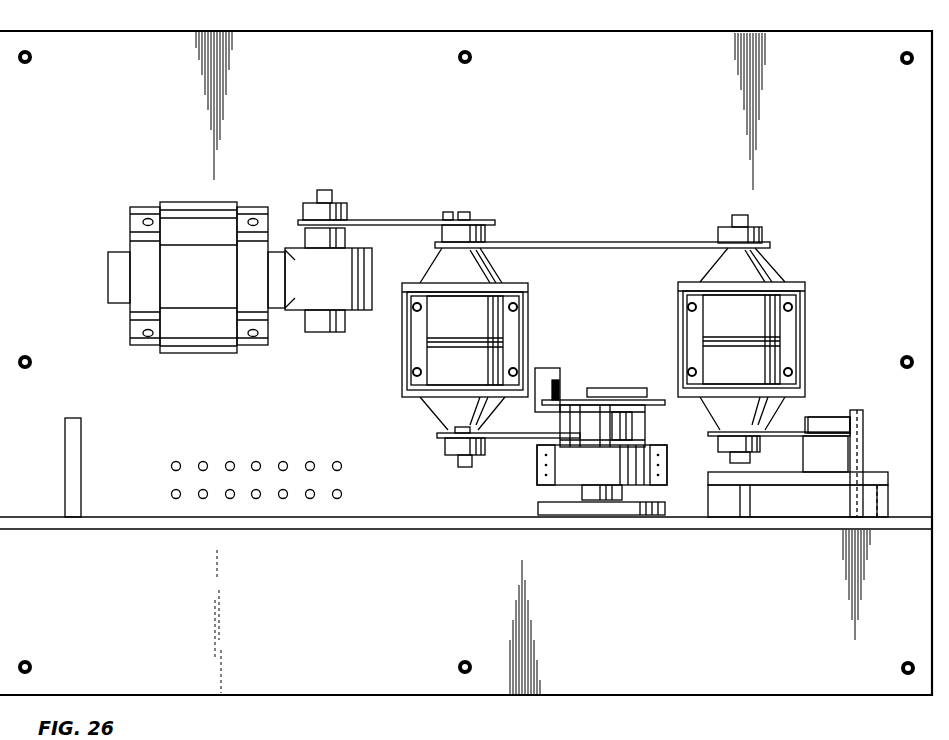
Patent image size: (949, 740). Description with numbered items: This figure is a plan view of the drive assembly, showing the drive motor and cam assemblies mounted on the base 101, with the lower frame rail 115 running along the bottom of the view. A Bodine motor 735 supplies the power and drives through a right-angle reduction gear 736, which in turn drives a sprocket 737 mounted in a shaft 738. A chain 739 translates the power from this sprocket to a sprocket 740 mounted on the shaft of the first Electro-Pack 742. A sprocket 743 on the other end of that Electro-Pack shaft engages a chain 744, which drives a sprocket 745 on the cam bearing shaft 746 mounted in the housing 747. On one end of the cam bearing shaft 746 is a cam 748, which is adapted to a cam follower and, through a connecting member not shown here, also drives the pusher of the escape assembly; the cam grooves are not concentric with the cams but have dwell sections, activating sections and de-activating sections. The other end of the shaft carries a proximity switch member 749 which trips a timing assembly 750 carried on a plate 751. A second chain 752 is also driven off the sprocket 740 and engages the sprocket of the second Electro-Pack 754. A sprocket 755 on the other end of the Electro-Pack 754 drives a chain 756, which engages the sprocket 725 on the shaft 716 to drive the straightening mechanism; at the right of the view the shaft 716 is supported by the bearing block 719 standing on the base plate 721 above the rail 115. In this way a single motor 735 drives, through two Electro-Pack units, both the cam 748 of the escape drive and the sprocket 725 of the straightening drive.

The base 101 is at (384, 136).
The base frame rail 115 is at (896, 517).
The shaft 716 is at (865, 432).
The bearing block 719 is at (845, 469).
The base plate 721 is at (872, 472).
The sprocket 725 is at (852, 410).
The Bodine motor 735 is at (208, 298).
The right-angle reduction gear 736 is at (330, 294).
The sprocket 737 is at (320, 200).
The shaft 738 is at (337, 196).
The chain 739 is at (386, 219).
The sprocket 740 is at (480, 222).
The Electro-Pack 742 is at (478, 329).
The sprocket 743 is at (468, 458).
The chain 744 is at (517, 426).
The sprocket 745 is at (630, 420).
The cam bearing shaft 746 is at (630, 436).
The housing 747 is at (618, 479).
The cam 748 is at (652, 517).
The proximity switch member 749 is at (613, 389).
The timing assembly 750 is at (543, 369).
The plate 751 is at (575, 399).
The chain 752 is at (625, 243).
The Electro-Pack 754 is at (754, 332).
The sprocket 755 is at (757, 447).
The chain 756 is at (790, 412).